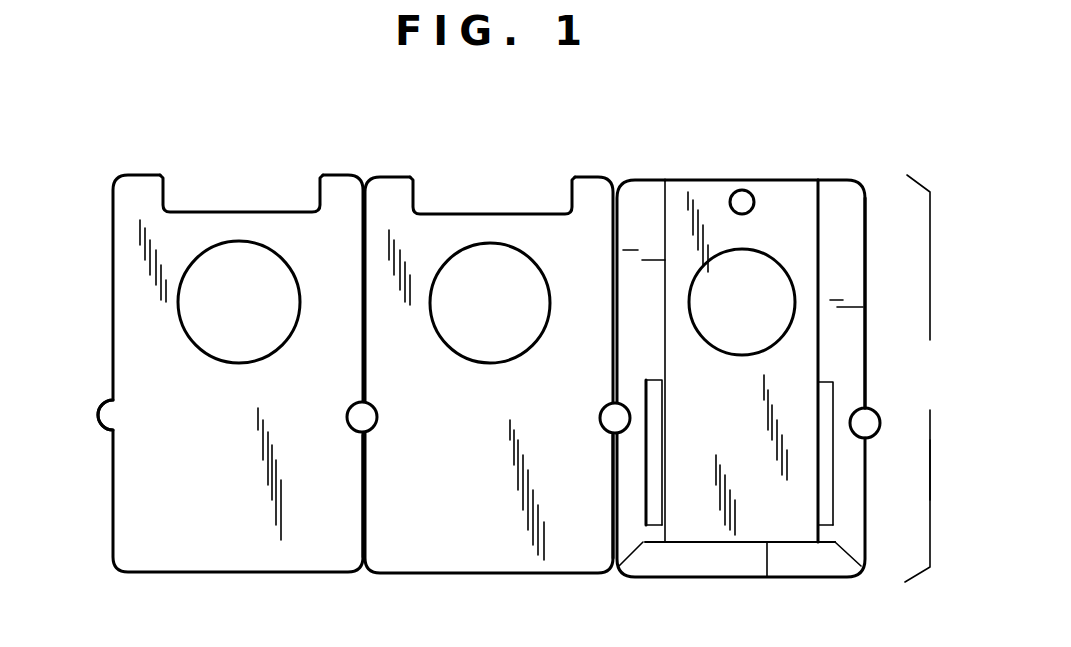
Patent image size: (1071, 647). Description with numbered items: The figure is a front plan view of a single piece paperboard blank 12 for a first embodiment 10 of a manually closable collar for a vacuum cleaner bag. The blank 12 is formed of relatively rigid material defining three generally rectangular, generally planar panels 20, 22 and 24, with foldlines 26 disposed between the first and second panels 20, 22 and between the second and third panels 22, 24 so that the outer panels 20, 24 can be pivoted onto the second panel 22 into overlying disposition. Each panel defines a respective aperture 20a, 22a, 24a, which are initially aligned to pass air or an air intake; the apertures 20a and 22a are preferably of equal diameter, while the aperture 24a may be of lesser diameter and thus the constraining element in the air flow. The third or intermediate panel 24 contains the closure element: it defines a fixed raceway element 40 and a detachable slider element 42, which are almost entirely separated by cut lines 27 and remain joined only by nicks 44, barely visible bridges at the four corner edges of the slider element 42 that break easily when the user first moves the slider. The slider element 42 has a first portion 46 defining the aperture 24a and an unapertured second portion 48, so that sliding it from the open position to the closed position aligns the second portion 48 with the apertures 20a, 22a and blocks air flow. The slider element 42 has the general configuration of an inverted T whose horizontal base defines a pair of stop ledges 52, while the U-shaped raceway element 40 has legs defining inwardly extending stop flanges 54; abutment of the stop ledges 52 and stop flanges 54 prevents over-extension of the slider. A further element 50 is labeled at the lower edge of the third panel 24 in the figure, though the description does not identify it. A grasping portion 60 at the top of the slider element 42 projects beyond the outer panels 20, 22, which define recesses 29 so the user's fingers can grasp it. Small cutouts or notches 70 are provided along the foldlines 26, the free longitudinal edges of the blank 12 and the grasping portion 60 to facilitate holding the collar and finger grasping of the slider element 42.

The first embodiment of the invention 10 is at (231, 158).
The paperboard blank 12 is at (489, 152).
The first panel 20 is at (208, 573).
The second panel 22 is at (448, 575).
The third panel 24 is at (717, 583).
The aperture of first panel 20a is at (272, 309).
The aperture of second panel 22a is at (523, 310).
The aperture of third panel 24a is at (775, 309).
The foldlines 26 is at (363, 498).
The cut lines 27 is at (645, 467).
The recesses 29 is at (318, 198).
The raceway element 40 is at (847, 268).
The slider element 42 is at (795, 508).
The nicks 44 is at (665, 180).
The first portion of slider element 46 is at (928, 342).
The second portion of slider element 48 is at (927, 470).
The bottom rim divider 50 is at (767, 580).
The stop ledges 52 is at (648, 522).
The stop flanges 54 is at (643, 380).
The grasping portion 60 is at (722, 180).
The cutouts or notches 70 is at (128, 412).